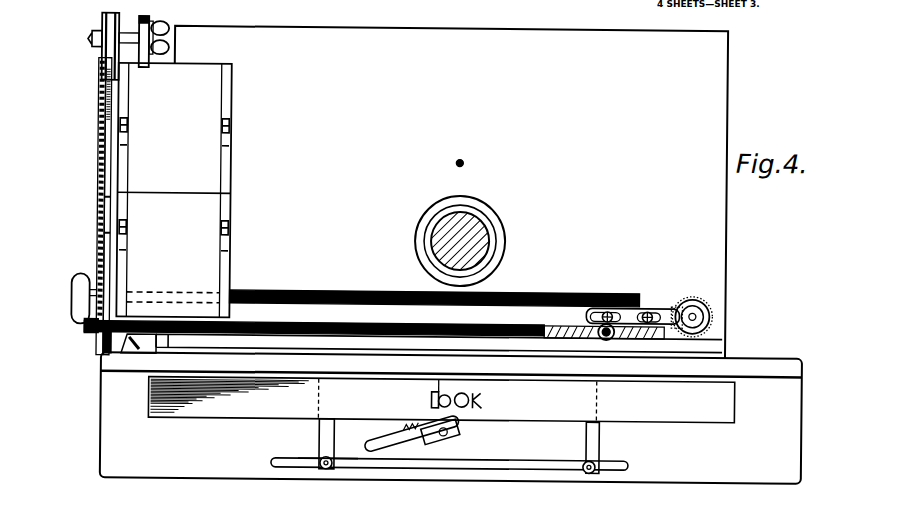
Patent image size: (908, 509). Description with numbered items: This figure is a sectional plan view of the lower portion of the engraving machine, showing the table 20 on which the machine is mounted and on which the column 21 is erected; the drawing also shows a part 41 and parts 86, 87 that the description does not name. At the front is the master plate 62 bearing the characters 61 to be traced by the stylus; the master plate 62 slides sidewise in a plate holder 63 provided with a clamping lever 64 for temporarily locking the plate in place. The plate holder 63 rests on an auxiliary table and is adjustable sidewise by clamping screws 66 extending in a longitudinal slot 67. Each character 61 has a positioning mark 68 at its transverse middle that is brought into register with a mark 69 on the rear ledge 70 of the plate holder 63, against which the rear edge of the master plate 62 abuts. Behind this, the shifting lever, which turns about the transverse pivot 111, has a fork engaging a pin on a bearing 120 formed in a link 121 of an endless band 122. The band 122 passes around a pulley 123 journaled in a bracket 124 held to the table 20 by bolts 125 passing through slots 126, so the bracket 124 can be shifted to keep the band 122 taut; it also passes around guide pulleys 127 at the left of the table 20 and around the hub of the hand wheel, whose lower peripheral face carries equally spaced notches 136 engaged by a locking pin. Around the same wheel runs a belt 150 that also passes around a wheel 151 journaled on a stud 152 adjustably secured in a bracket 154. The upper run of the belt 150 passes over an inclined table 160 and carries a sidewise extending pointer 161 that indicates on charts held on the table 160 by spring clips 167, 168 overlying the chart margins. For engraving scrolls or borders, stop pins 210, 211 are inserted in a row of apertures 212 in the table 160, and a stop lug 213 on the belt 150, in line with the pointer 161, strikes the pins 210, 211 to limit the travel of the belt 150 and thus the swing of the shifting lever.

The table 20 is at (450, 192).
The column 21 is at (478, 241).
The pivot stud 41 is at (459, 160).
The characters 61 is at (484, 401).
The master plate 62 is at (535, 420).
The plate holder 63 is at (601, 443).
The clamping lever 64 is at (429, 440).
The clamping screws 66 is at (209, 472).
The longitudinal slot 67 is at (529, 468).
The positioning mark 68 is at (478, 392).
The mark 69 is at (462, 392).
The rear ledge 70 is at (557, 379).
The pivot 86 is at (328, 471).
The link 87 is at (381, 465).
The transverse pivot 111 is at (611, 335).
The bearing 120 is at (604, 337).
The link 121 is at (586, 315).
The endless band 122 is at (470, 321).
The pulley 123 is at (704, 298).
The bracket 124 is at (677, 305).
The bolts 125 is at (611, 310).
The slots 126 is at (603, 310).
The guide pulleys 127 is at (147, 296).
The notches 136 is at (72, 327).
The endless band or belt 150 is at (103, 236).
The wheel 151 is at (108, 22).
The stud 152 is at (93, 41).
The bracket 154 is at (146, 24).
The table 160 is at (209, 72).
The pointer 161 is at (177, 197).
The spring clip 167 is at (124, 138).
The spring clip 168 is at (126, 238).
The stop pin 210 is at (99, 82).
The stop pin 211 is at (80, 304).
The apertures 212 is at (104, 120).
The stop lug 213 is at (104, 200).